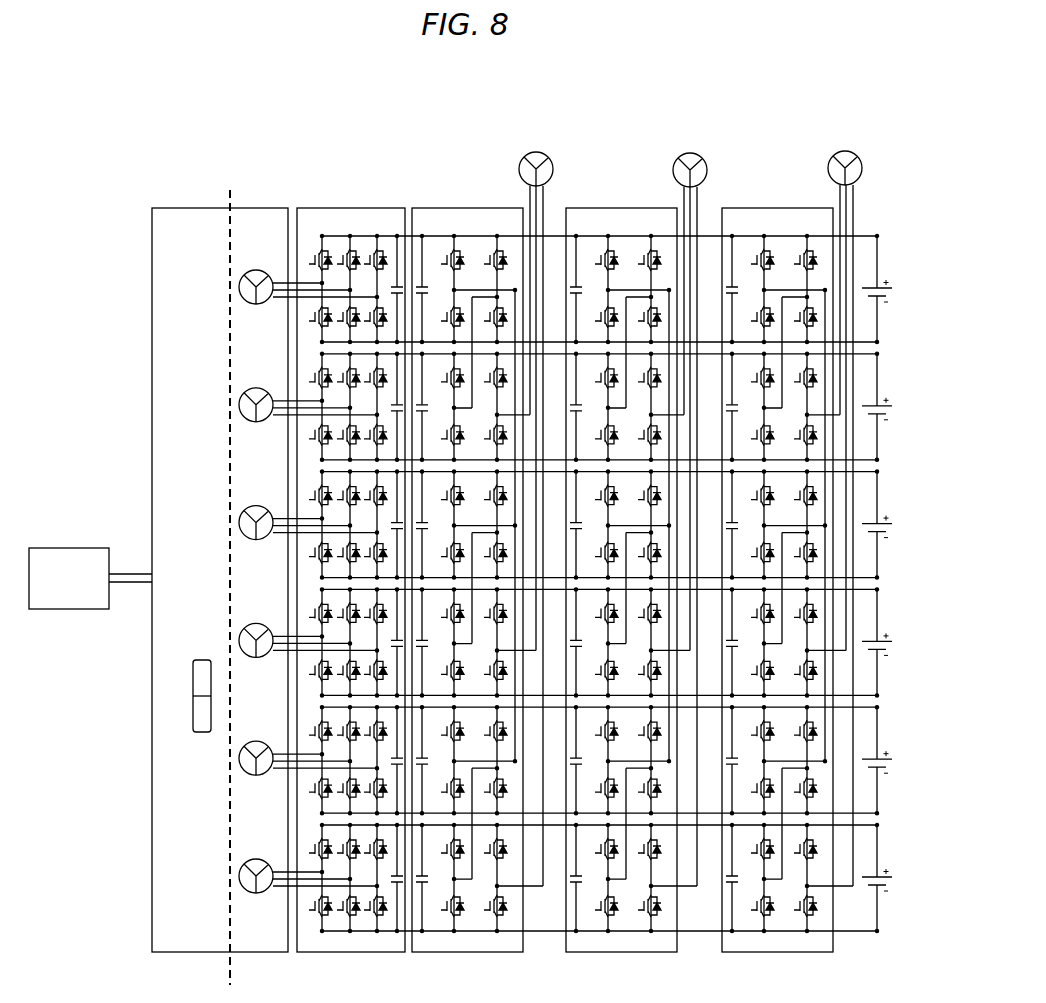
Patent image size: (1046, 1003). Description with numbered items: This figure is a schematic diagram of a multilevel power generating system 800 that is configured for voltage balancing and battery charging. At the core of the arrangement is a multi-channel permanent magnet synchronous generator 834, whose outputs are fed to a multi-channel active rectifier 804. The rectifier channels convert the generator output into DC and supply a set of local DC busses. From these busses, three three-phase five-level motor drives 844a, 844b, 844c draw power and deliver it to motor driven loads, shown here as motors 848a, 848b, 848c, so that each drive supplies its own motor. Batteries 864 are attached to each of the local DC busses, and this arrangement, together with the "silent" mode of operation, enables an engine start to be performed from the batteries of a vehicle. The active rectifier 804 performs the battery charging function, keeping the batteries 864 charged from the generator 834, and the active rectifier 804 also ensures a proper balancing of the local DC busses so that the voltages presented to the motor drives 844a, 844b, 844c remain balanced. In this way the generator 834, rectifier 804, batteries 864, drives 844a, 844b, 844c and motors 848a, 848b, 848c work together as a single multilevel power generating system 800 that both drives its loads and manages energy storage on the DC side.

The multilevel power generating system 800 is at (719, 88).
The multi-channel permanent magnet synchronous generator 834 is at (292, 190).
The multi-channel active rectifier 804 is at (402, 190).
The 3-phase 5-level motor drive 844a is at (466, 216).
The 3-phase 5-level motor drive 844b is at (592, 216).
The 3-phase 5-level motor drive 844c is at (752, 228).
The motor 848a is at (533, 167).
The motor 848b is at (692, 158).
The motor 848c is at (833, 163).
The batteries 864 is at (878, 207).